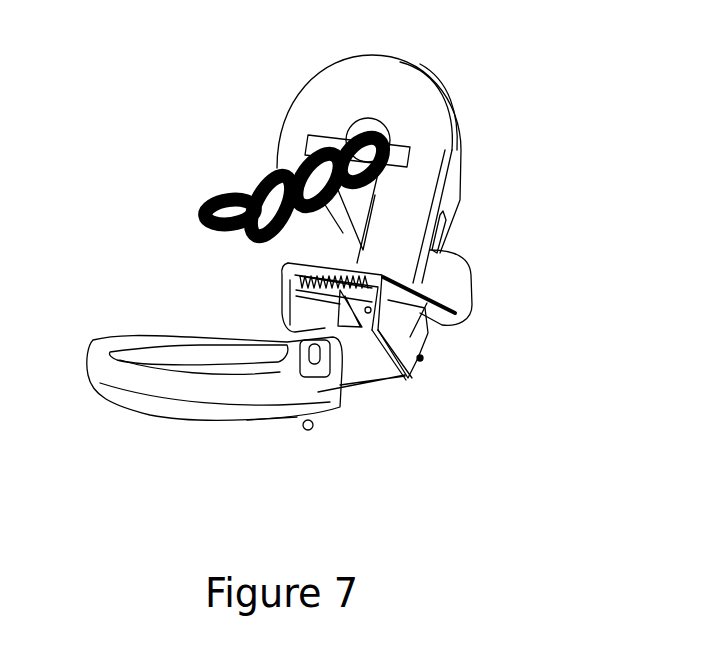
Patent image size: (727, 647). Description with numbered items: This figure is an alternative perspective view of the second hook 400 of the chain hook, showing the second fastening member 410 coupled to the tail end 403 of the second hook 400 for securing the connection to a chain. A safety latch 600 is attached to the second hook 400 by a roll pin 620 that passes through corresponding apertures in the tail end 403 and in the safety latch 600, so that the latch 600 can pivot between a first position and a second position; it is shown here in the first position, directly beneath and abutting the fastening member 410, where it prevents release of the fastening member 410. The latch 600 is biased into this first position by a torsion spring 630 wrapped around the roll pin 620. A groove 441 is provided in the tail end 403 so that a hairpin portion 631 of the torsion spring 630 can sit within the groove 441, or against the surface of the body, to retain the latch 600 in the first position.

The second hook 400 is at (413, 88).
The second fastening member 410 is at (457, 258).
The tail end 403 is at (403, 277).
The safety latch 600 is at (428, 332).
The roll pin 620 is at (425, 362).
The torsion spring 630 is at (287, 277).
The hairpin portion 631 is at (340, 302).
The groove 441 is at (340, 320).